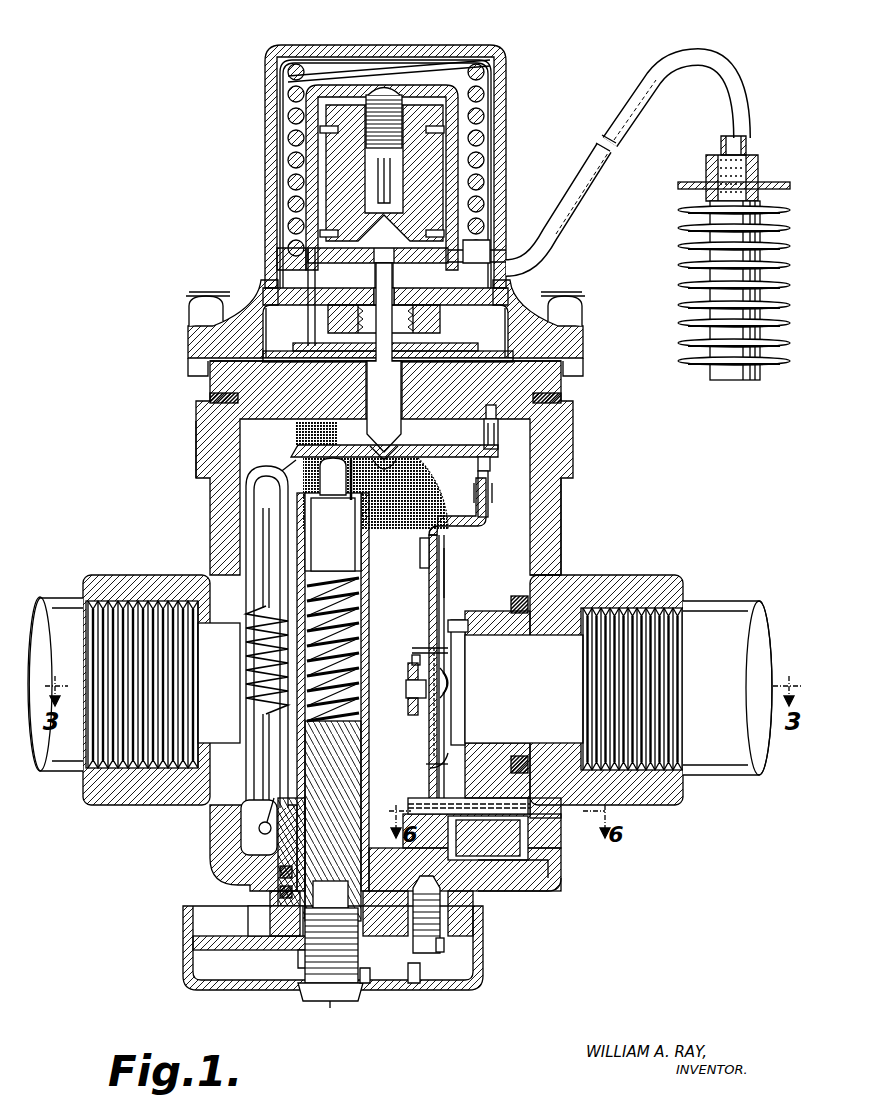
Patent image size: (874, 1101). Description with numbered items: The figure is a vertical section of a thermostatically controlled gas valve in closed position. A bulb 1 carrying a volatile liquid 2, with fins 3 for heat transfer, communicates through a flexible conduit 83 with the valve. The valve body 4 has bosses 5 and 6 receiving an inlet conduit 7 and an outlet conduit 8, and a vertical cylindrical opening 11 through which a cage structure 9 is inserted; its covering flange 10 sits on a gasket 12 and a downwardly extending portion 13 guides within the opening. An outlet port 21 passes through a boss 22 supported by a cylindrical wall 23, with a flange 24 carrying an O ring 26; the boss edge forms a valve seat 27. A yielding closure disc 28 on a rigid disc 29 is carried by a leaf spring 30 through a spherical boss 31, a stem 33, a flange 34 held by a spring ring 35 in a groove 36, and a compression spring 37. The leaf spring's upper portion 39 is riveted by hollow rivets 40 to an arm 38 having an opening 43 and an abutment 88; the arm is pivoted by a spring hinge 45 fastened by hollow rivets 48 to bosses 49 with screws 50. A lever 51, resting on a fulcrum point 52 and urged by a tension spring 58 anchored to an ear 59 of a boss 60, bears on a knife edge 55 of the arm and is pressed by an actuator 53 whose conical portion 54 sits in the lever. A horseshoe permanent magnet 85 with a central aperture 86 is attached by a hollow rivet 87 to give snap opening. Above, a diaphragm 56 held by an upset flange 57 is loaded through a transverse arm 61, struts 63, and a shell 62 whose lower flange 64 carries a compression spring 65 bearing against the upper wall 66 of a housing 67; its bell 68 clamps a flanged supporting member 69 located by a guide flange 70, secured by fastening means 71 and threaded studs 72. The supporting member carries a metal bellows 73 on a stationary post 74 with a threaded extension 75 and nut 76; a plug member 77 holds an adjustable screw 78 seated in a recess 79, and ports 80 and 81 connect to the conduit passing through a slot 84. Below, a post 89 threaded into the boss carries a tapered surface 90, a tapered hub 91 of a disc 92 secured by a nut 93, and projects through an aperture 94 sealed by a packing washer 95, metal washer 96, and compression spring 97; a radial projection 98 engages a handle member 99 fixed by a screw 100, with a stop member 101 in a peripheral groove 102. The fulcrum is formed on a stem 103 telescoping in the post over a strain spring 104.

The bulb 1 is at (702, 228).
The volatile liquid 2 is at (745, 163).
The fins 3 is at (680, 276).
The valve body 4 is at (565, 432).
The boss 5 is at (118, 567).
The boss 6 is at (618, 567).
The pipe or conduit 7 is at (60, 592).
The outlet conduit 8 is at (712, 595).
The cage structure 9 is at (454, 573).
The covering flange 10 is at (222, 370).
The cylindrical opening 11 is at (550, 412).
The gasket 12 is at (555, 390).
The downwardly extending portion 13 is at (215, 398).
The outlet port 21 is at (490, 735).
The boss 22 is at (476, 603).
The cylindrical wall 23 is at (515, 840).
The flange 24 is at (510, 588).
The O ring 26 is at (525, 585).
The valve seat 27 is at (458, 638).
The yielding closure disc 28 is at (457, 664).
The rigid disc 29 is at (447, 680).
The leaf spring 30 is at (420, 582).
The boss 31 is at (426, 716).
The stem 33 is at (400, 700).
The flange 34 is at (404, 649).
The spring ring 35 is at (400, 660).
The annular groove 36 is at (398, 682).
The compression spring 37 is at (408, 642).
The arm 38 is at (420, 605).
The horizontal upper portion 39 is at (428, 522).
The hollow rivets 40 is at (415, 548).
The opening 43 is at (418, 756).
The spring hinge 45 is at (490, 430).
The hollow rivets 48 is at (480, 490).
The bosses 49 is at (422, 440).
The screws 50 is at (488, 403).
The lever 51 is at (405, 470).
The fulcrum point 52 is at (285, 460).
The actuator 53 is at (395, 442).
The actuating portion 54 is at (388, 452).
The knife edge 55 is at (482, 462).
The flexible diaphragm 56 is at (462, 350).
The upset flange 57 is at (268, 345).
The tension spring 58 is at (258, 598).
The ear 59 is at (250, 822).
The boss 60 is at (262, 835).
The transverse arm 61 is at (455, 336).
The cylindrical shell 62 is at (451, 118).
The struts 63 is at (275, 268).
The lower flange 64 is at (478, 242).
The compression spring 65 is at (477, 165).
The upper wall 66 is at (330, 40).
The housing 67 is at (498, 68).
The bell 68 is at (235, 297).
The flanged supporting member 69 is at (200, 340).
The guide flange 70 is at (556, 340).
The fastening means 71 is at (181, 298).
The threaded studs 72 is at (188, 284).
The metal bellows 73 is at (440, 140).
The stationary post 74 is at (300, 258).
The threaded extension 75 is at (375, 350).
The nut 76 is at (325, 311).
The plug member 77 is at (415, 105).
The adjustable screw 78 is at (387, 92).
The recess 79 is at (372, 78).
The port 80 is at (390, 262).
The port 81 is at (366, 287).
The flexible tube or conduit 83 is at (620, 122).
The slot 84 is at (490, 250).
The horseshoe permanent magnet 85 is at (472, 862).
The central aperture 86 is at (450, 798).
The hollow rivet 87 is at (522, 798).
The abutment 88 is at (440, 745).
The post 89 is at (353, 728).
The tapered surface 90 is at (360, 975).
The tapered hub 91 is at (290, 912).
The disc 92 is at (218, 950).
The nut 93 is at (292, 960).
The aperture 94 is at (406, 975).
The packing washer 95 is at (270, 864).
The metal washer 96 is at (270, 884).
The compression spring 97 is at (280, 930).
The radial projection 98 is at (180, 936).
The handle member 99 is at (180, 972).
The screw 100 is at (322, 972).
The stop member 101 is at (430, 915).
The arcuate peripheral groove 102 is at (436, 935).
The stem 103 is at (300, 516).
The strain spring 104 is at (318, 572).